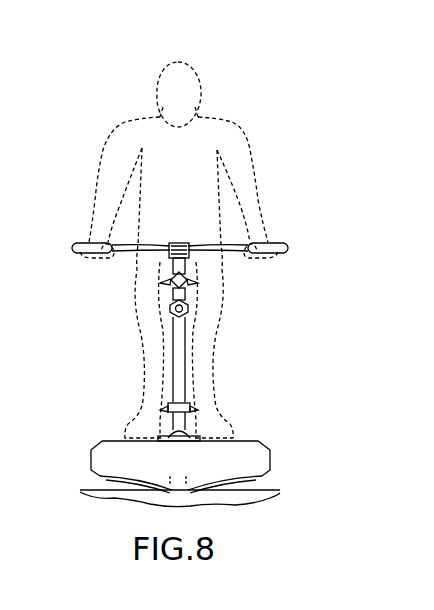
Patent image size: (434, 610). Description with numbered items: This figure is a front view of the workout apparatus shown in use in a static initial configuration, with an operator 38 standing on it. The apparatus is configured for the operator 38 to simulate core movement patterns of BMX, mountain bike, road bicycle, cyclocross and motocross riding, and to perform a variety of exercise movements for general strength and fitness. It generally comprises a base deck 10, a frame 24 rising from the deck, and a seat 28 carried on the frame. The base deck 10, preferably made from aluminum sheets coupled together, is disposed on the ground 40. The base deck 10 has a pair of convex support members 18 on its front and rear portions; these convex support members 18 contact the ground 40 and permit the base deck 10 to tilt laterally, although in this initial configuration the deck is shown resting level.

The base deck 10 is at (167, 368).
The convex support members 18 is at (108, 480).
The frame 24 is at (176, 368).
The seat 28 is at (190, 282).
The operator 38 is at (224, 110).
The ground 40 is at (272, 488).